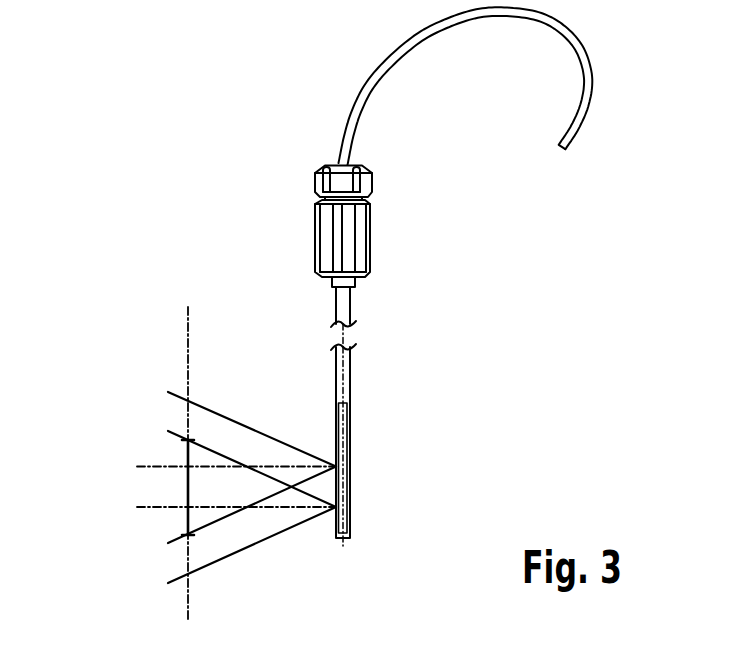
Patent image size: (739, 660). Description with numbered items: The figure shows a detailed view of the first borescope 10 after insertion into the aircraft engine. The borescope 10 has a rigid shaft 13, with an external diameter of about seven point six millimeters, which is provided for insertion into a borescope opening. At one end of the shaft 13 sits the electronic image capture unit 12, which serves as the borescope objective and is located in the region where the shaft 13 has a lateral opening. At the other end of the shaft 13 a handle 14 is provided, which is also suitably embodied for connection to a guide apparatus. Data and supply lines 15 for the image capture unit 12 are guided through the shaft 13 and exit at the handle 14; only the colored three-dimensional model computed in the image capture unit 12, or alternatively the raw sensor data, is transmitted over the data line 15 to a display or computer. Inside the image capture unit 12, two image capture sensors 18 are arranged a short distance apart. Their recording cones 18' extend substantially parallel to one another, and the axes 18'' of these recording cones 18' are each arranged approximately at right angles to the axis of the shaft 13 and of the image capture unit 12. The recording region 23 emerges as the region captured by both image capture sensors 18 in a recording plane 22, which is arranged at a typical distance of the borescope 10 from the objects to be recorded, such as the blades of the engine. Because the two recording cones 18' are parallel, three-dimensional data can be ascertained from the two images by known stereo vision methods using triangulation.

The borescope 10 is at (610, 80).
The electronic image capture unit 12 is at (345, 415).
The shaft 13 is at (352, 310).
The handle 14 is at (368, 232).
The data and supply lines 15 is at (398, 58).
The image capture sensors 18 is at (294, 486).
The recording cones 18' is at (252, 418).
The axes of the recording cones 18'' is at (252, 547).
The recording plane 22 is at (188, 357).
The recording region 23 is at (188, 493).